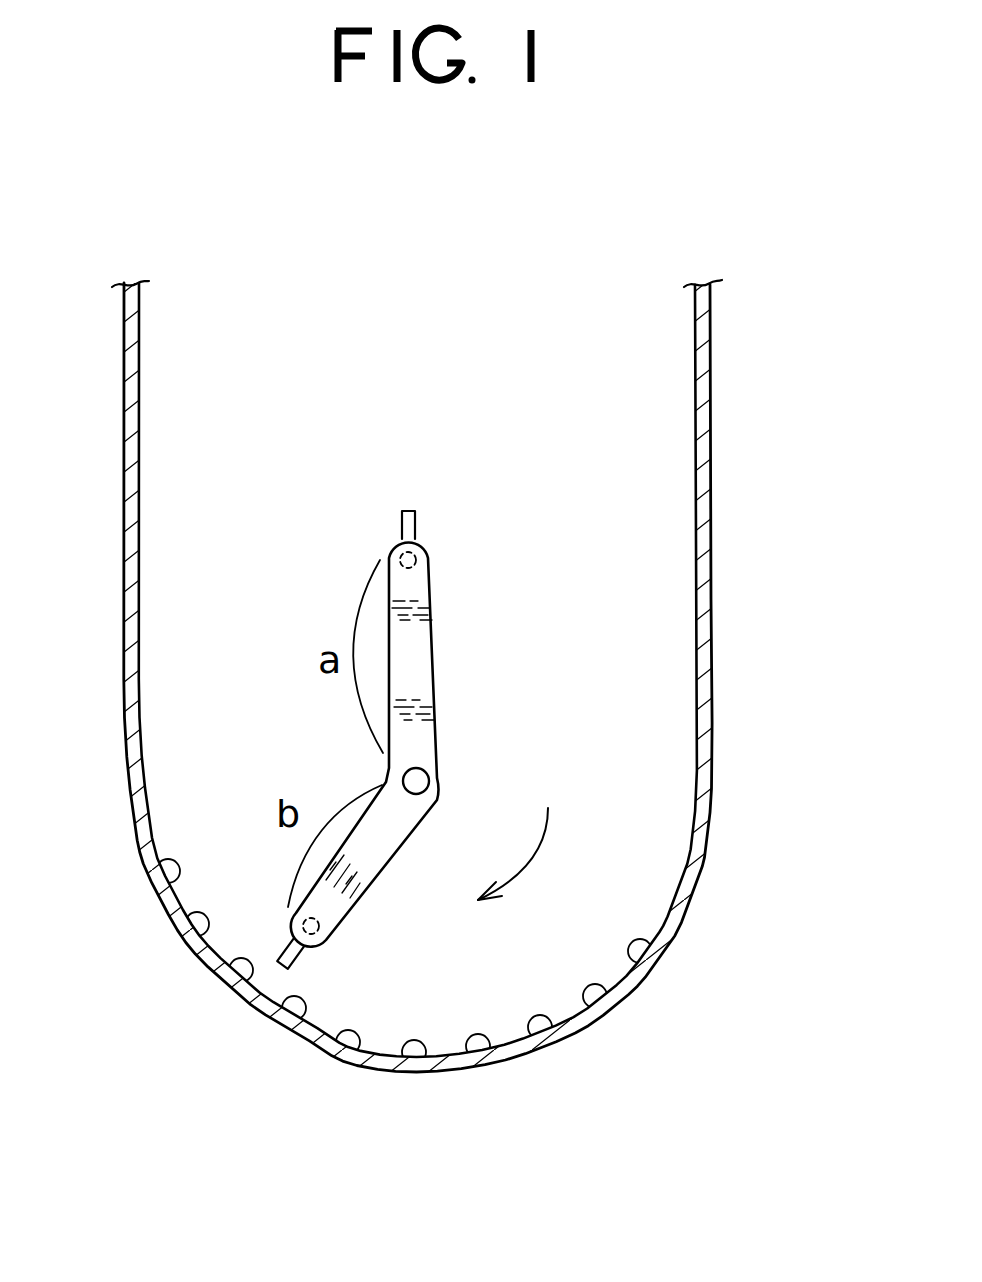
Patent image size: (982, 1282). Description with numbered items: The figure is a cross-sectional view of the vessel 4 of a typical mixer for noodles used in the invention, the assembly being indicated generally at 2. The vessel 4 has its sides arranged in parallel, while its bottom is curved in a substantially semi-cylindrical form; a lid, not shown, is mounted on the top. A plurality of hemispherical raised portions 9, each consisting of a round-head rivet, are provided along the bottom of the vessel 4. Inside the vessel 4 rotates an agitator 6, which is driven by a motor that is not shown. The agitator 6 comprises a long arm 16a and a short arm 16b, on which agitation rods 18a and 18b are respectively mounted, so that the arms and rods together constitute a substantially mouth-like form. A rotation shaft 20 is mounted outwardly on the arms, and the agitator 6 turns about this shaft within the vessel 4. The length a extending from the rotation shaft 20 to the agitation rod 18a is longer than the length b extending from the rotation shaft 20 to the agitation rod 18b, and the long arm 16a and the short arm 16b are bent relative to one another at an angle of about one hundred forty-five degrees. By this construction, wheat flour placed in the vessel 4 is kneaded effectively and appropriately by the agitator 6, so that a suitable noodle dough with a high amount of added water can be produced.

The treating vessel 2 is at (743, 268).
The vessel 4 is at (704, 386).
The agitator 6 is at (275, 724).
The hemispherical raised portions 9 is at (655, 940).
The long arm 16a is at (432, 688).
The short arm 16b is at (372, 852).
The agitation rod 18a is at (428, 543).
The agitation rod 18b is at (300, 923).
The rotation shaft 20 is at (425, 776).